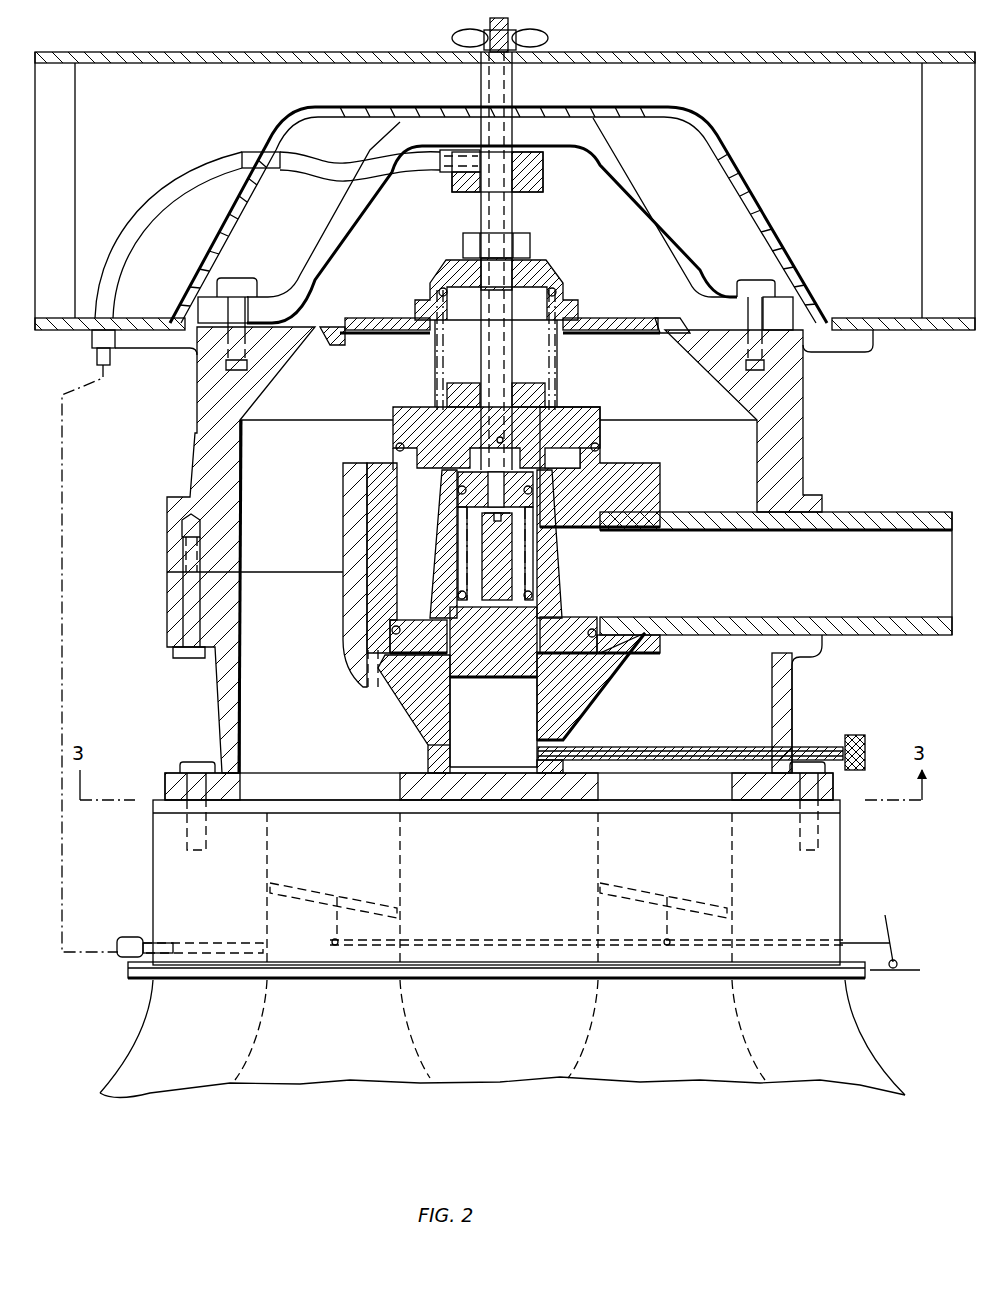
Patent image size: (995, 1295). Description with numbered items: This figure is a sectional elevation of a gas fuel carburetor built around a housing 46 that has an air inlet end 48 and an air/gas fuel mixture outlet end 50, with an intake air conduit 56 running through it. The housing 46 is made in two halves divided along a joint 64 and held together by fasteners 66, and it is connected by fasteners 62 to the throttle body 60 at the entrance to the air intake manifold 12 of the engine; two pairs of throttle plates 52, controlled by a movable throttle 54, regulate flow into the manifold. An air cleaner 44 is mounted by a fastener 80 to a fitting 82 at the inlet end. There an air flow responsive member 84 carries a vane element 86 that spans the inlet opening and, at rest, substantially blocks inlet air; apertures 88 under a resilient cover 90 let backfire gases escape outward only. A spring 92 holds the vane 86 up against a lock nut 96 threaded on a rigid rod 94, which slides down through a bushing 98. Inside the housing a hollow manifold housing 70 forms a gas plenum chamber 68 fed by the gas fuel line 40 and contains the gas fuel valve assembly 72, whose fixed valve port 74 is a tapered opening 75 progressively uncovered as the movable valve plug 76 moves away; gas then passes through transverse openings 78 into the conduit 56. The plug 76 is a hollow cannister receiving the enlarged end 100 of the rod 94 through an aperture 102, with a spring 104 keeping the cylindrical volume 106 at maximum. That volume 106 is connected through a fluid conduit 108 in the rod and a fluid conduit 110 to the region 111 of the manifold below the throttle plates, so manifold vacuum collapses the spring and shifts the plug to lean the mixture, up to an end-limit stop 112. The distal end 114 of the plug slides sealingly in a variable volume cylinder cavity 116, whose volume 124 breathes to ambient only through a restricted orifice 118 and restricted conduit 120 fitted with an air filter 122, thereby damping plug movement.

The air intake manifold 12 is at (145, 1022).
The gas fuel line 40 is at (908, 510).
The air cleaner 44 is at (80, 142).
The housing 46 is at (806, 412).
The air inlet end 48 is at (335, 315).
The air/gas fuel mixture outlet end 50 is at (255, 770).
The throttle plates 52 is at (345, 895).
The movable throttle 54 is at (892, 940).
The intake air conduit 56 is at (240, 437).
The throttle body 60 is at (152, 888).
The fasteners 62 is at (195, 762).
The joint 64 is at (238, 570).
The fasteners 66 is at (184, 655).
The gas plenum chamber 68 is at (578, 472).
The manifold housing 70 is at (648, 492).
The gas fuel valve assembly 72 is at (433, 500).
The fixed valve port 74 is at (472, 465).
The tapered opening 75 is at (548, 600).
The movable valve plug 76 is at (540, 575).
The transverse openings 78 is at (640, 665).
The fastener 80 is at (470, 30).
The fitting 82 is at (668, 212).
The air flow responsive member 84 is at (340, 338).
The vane element 86 is at (618, 336).
The apertures 88 is at (389, 336).
The resilient material cover 90 is at (395, 318).
The spring 92 is at (556, 340).
The rigid rod 94 is at (480, 345).
The lock nut 96 is at (530, 250).
The bushing 98 is at (520, 352).
The enlarged end 100 is at (470, 512).
The aperture 102 is at (393, 408).
The spring 104 is at (456, 592).
The cylindrical volume 106 is at (565, 580).
The fluid conduit 108 is at (515, 440).
The fluid conduit 110 is at (168, 180).
The region 111 is at (270, 946).
The end-limit stop 112 is at (508, 546).
The distal end 114 is at (612, 675).
The variable volume cylinder cavity 116 is at (452, 700).
The restricted orifice 118 is at (500, 750).
The restricted conduit 120 is at (745, 745).
The air filter 122 is at (888, 718).
The volume 124 is at (548, 725).